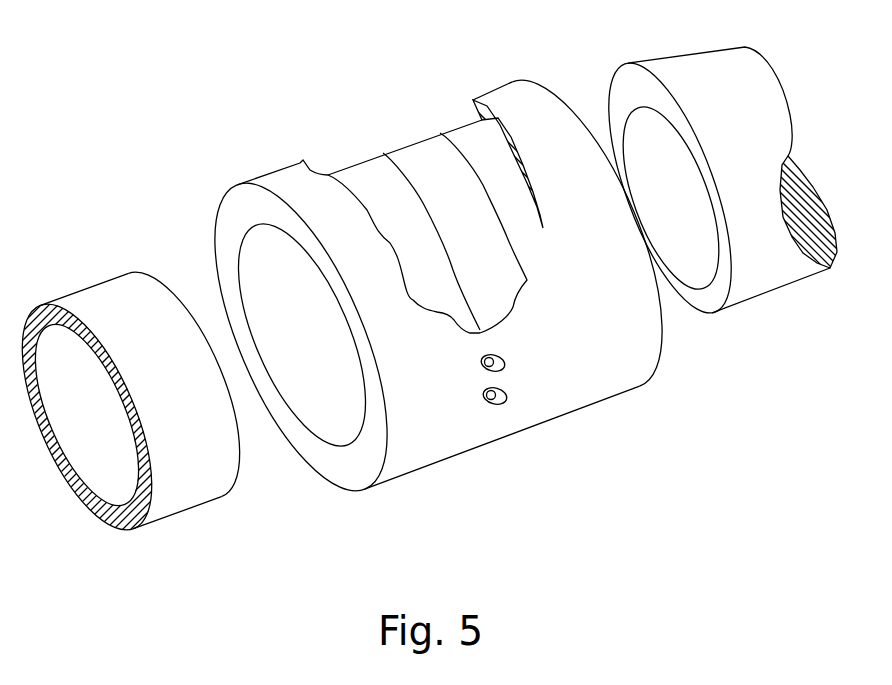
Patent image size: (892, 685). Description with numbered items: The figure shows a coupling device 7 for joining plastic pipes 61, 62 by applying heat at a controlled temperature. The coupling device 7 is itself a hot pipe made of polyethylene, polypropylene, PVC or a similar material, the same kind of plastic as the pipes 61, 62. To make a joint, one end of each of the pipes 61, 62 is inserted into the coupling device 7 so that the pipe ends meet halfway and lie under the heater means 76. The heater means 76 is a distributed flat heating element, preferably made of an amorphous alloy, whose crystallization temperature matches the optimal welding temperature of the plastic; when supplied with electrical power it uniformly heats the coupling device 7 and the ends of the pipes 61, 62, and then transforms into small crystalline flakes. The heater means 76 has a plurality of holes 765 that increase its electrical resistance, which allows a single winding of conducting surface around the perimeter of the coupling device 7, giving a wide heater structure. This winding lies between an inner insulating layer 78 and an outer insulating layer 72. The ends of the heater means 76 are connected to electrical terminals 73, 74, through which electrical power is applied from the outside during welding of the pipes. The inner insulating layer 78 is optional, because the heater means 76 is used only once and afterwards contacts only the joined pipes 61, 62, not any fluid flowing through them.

The coupling device 7 is at (590, 395).
The plastic pipe 61 is at (194, 497).
The plastic pipe 62 is at (765, 283).
The outer insulating layer 72 is at (288, 176).
The electrical terminal 73 is at (485, 366).
The electrical terminal 74 is at (502, 402).
The heater means 76 is at (382, 157).
The holes 765 is at (392, 152).
The inner insulating layer 78 is at (450, 137).